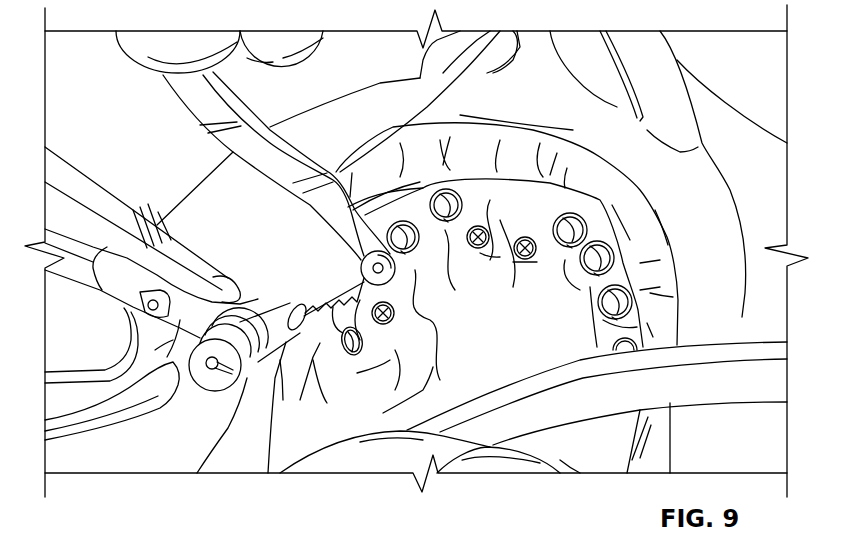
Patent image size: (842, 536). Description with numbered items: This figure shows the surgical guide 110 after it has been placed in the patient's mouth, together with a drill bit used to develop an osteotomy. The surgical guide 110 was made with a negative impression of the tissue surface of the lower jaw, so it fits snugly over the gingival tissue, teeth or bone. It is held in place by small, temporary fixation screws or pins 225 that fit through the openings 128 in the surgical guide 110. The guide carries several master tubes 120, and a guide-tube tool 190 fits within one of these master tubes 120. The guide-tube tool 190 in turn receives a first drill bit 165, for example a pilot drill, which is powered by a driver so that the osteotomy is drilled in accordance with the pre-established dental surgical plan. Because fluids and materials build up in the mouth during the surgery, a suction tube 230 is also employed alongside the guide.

The surgical guide 110 is at (499, 198).
The master tubes 120 is at (450, 220).
The openings 128 is at (525, 259).
The first drill bit 165 is at (362, 258).
The guide-tube tool 190 is at (195, 108).
The fixation screws or pins 225 is at (530, 258).
The suction tube 230 is at (732, 390).